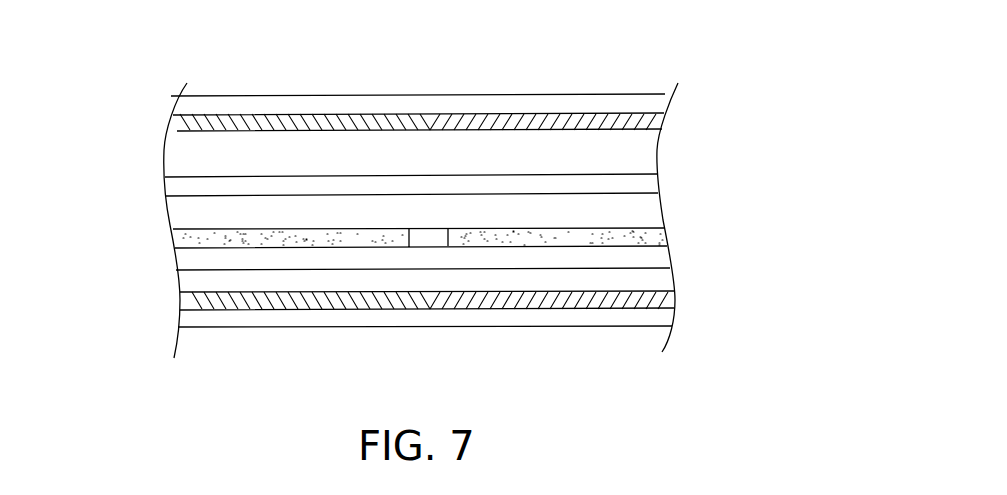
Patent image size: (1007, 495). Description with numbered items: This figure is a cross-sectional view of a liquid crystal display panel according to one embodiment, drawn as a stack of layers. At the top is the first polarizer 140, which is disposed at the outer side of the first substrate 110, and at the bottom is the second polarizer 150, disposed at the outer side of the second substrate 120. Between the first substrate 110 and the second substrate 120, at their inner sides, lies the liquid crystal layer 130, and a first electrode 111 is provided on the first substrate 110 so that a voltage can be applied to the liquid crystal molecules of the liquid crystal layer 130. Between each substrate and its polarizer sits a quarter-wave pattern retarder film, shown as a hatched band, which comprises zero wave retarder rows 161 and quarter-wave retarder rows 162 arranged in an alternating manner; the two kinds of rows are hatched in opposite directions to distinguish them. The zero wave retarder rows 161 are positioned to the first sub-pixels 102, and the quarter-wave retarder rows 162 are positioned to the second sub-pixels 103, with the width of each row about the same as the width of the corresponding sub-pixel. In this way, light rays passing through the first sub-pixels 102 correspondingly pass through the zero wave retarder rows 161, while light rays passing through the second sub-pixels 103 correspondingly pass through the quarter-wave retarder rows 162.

The first polarizer 140 is at (660, 85).
The λ/4 retarder rows 162 is at (660, 112).
The zero wave retarder rows 161 is at (172, 116).
The first substrate 110 is at (660, 148).
The first electrode 111 is at (657, 183).
The liquid crystal layer 130 is at (657, 208).
The first sub-pixels 102 is at (178, 239).
The second sub-pixels 103 is at (663, 233).
The second substrate 120 is at (662, 275).
The second polarizer 150 is at (672, 320).